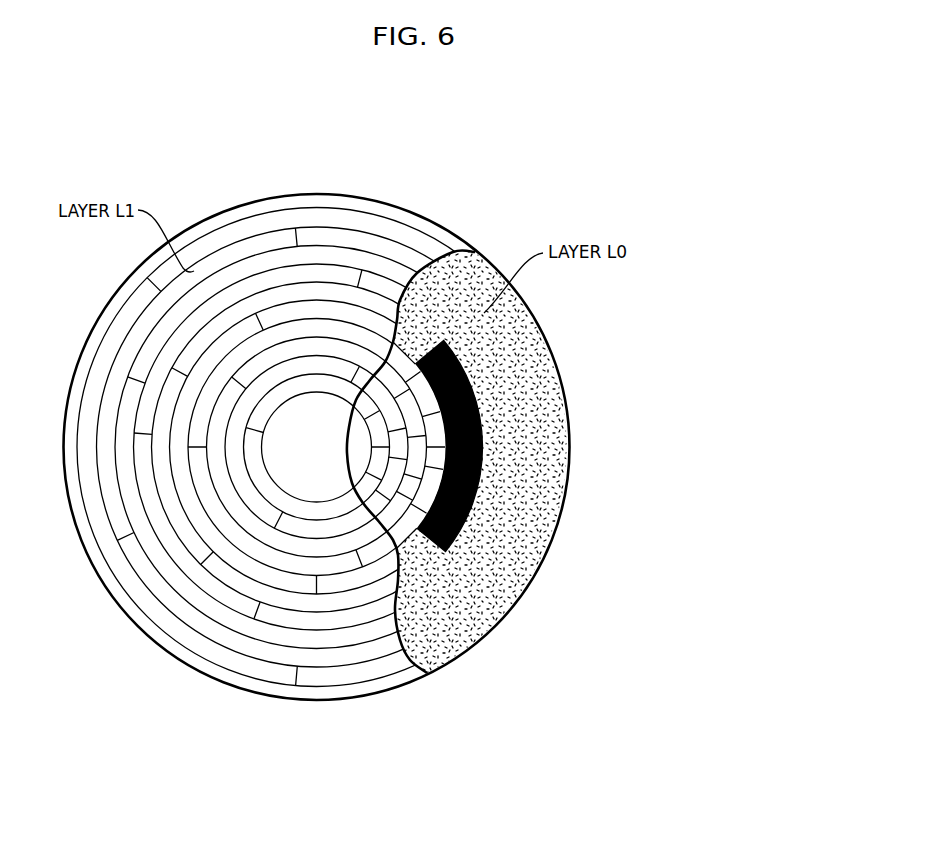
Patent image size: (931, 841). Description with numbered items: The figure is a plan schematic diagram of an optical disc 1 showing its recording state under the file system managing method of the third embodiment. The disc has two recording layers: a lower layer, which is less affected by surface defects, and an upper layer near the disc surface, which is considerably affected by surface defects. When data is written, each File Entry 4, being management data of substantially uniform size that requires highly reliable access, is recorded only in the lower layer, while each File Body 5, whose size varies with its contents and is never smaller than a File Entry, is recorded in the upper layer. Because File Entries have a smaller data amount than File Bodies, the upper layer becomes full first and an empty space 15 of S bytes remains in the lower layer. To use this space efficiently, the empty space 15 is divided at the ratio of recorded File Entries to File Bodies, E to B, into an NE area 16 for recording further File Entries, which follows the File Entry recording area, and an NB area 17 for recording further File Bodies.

The optical disc 1 is at (405, 190).
The File Entry 4 is at (400, 537).
The File Body 5 is at (247, 665).
The empty space 15 is at (578, 461).
The NE area 16 is at (487, 460).
The NB area 17 is at (528, 548).